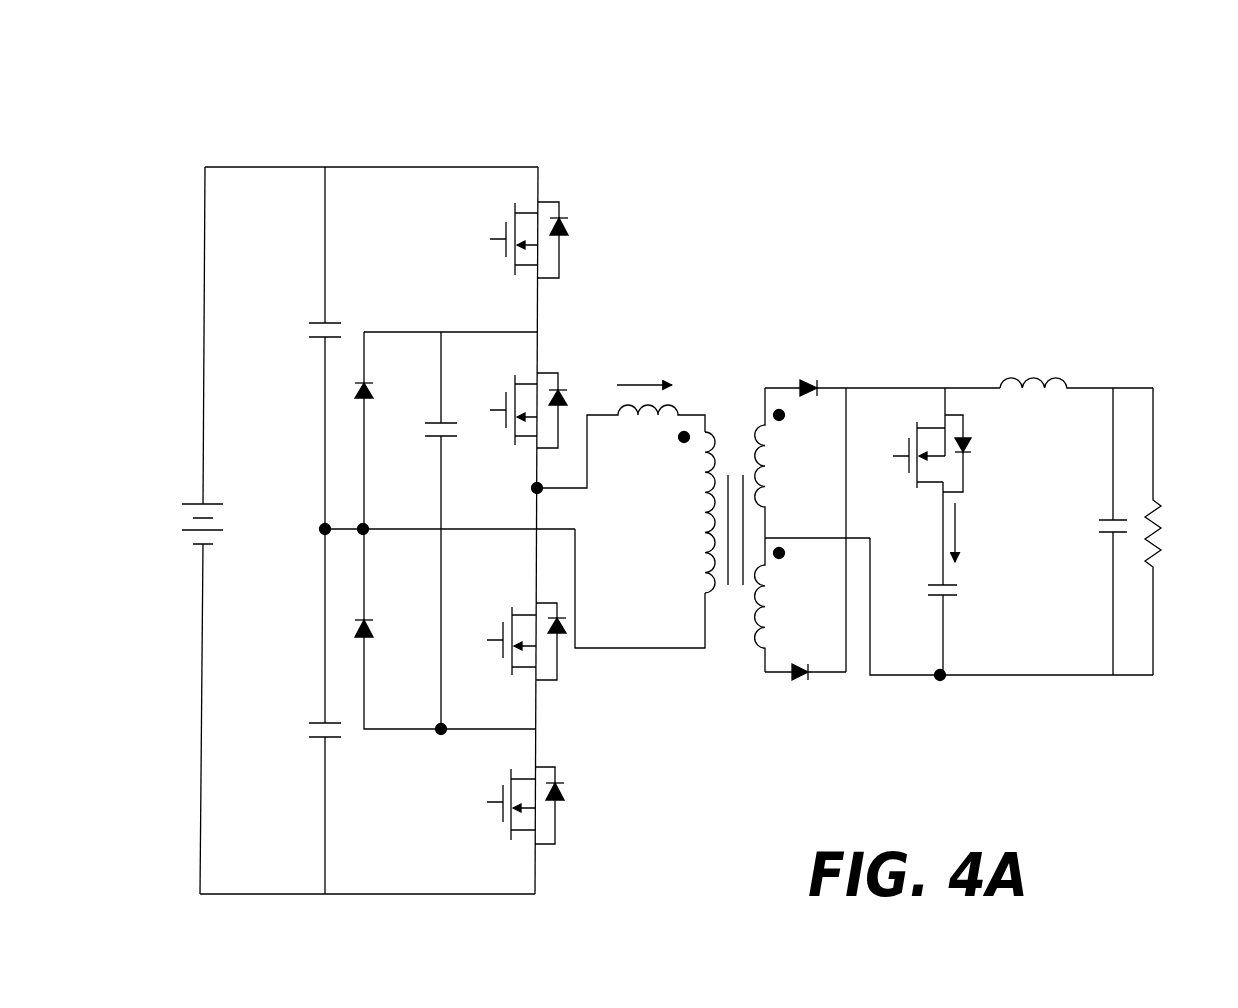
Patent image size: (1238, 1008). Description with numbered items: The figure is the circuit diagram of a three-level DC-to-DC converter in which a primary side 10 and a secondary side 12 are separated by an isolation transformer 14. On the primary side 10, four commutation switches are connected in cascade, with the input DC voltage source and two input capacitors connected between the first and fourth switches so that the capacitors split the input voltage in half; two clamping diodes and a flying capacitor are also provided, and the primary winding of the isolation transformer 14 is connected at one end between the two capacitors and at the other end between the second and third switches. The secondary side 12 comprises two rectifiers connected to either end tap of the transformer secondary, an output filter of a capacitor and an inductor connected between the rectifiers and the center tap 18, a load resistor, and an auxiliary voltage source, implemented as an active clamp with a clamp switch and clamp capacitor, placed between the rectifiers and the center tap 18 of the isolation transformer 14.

The primary side 10 is at (384, 145).
The secondary side 12 is at (868, 340).
The isolation transformer 14 is at (733, 366).
The center tap 18 is at (767, 527).